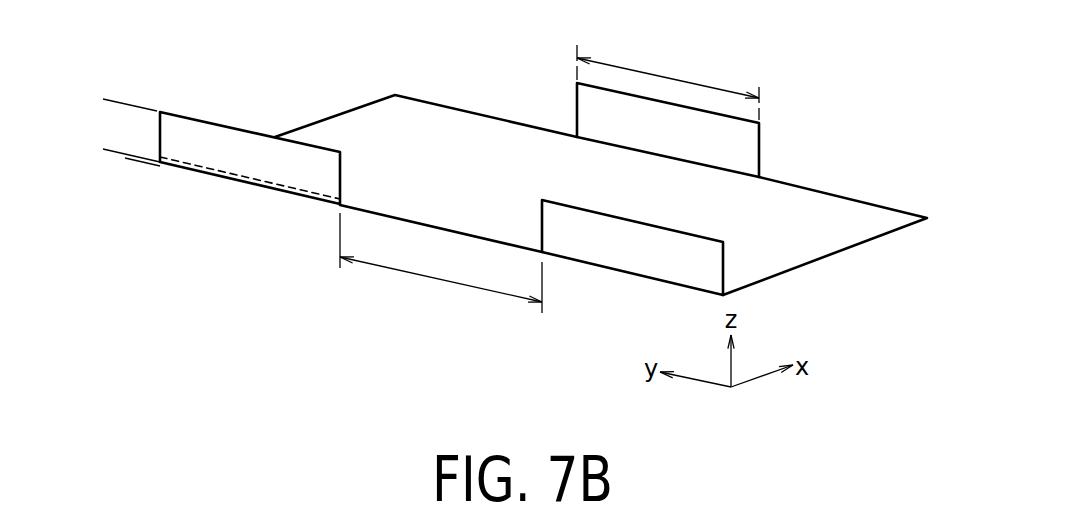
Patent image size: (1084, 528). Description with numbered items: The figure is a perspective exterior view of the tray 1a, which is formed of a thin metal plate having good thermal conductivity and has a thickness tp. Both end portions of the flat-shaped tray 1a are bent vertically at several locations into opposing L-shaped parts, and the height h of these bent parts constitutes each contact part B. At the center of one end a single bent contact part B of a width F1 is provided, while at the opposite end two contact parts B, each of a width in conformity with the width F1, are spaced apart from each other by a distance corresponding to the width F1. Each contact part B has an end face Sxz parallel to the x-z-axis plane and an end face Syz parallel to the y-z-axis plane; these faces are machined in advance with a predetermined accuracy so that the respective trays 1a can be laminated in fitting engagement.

The tray 1a is at (853, 200).
The contact part B is at (245, 184).
The height h is at (108, 99).
The thickness tp is at (129, 119).
The width F1 is at (549, 179).
The end face Sxz is at (541, 227).
The end face Syz is at (492, 240).